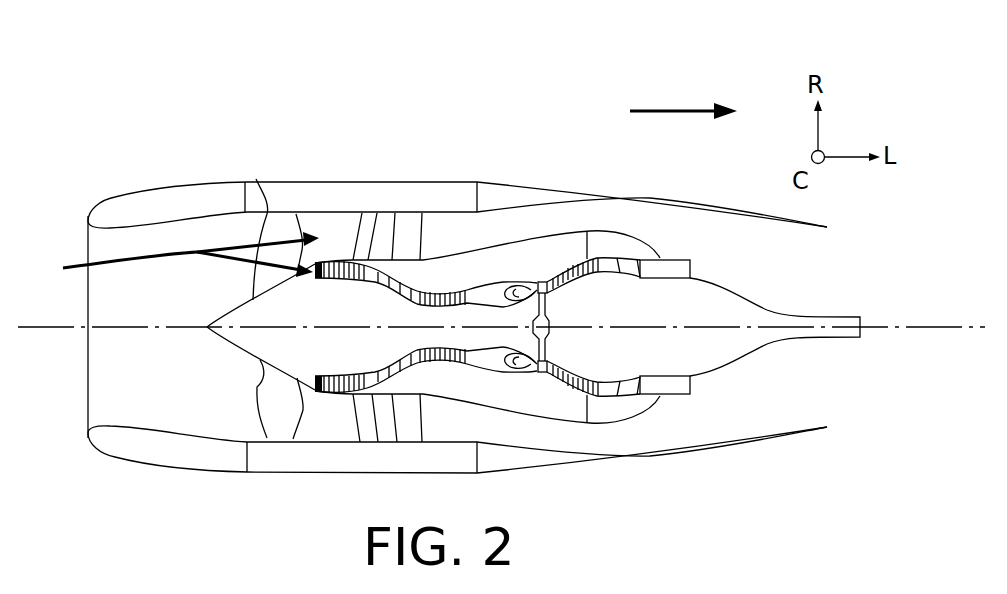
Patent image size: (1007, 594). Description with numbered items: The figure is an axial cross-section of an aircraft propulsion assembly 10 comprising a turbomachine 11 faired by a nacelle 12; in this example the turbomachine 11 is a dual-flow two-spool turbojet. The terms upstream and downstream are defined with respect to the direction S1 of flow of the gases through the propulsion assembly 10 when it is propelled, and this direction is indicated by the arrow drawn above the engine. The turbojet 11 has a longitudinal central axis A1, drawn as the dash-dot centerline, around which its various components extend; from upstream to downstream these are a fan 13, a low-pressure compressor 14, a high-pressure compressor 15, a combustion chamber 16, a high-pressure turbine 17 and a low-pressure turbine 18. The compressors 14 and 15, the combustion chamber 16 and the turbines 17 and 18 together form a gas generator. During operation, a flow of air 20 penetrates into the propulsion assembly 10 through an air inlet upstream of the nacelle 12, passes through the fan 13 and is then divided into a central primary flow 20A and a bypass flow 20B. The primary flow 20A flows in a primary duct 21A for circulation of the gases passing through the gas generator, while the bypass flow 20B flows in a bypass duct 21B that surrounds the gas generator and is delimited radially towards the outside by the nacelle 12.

The aircraft propulsion assembly 10 is at (248, 138).
The turbomachine 11 is at (724, 267).
The nacelle 12 is at (369, 195).
The fan 13 is at (270, 393).
The low-pressure compressor 14 is at (338, 254).
The high-pressure compressor 15 is at (453, 286).
The combustion chamber 16 is at (516, 275).
The high-pressure turbine 17 is at (544, 272).
The low-pressure turbine 18 is at (610, 248).
The flow of air 20 is at (63, 268).
The central primary flow 20A is at (256, 275).
The bypass flow 20B is at (282, 233).
The primary duct 21A is at (492, 362).
The bypass duct 21B is at (557, 407).
The longitudinal central axis A1 is at (40, 328).
The direction of flow of the gases S1 is at (680, 108).